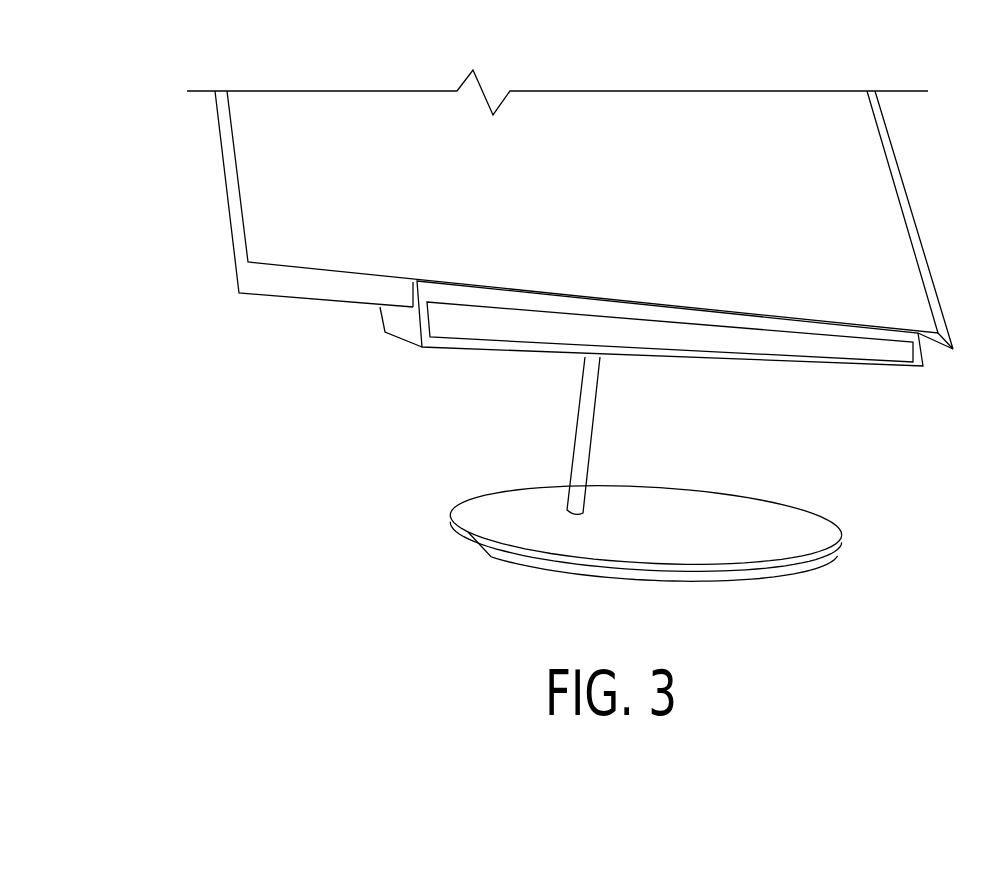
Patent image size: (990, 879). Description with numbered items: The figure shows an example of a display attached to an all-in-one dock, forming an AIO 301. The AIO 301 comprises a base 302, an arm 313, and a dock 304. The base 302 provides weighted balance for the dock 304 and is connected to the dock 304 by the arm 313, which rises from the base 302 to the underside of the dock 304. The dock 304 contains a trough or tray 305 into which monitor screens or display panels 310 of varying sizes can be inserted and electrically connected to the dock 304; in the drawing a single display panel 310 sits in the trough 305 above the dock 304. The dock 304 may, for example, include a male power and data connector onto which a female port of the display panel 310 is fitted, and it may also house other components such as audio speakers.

The AIO 301 is at (504, 325).
The base 302 is at (712, 498).
The dock 304 is at (413, 328).
The trough or tray 305 is at (402, 308).
The display panel 310 is at (225, 172).
The arm 313 is at (588, 428).